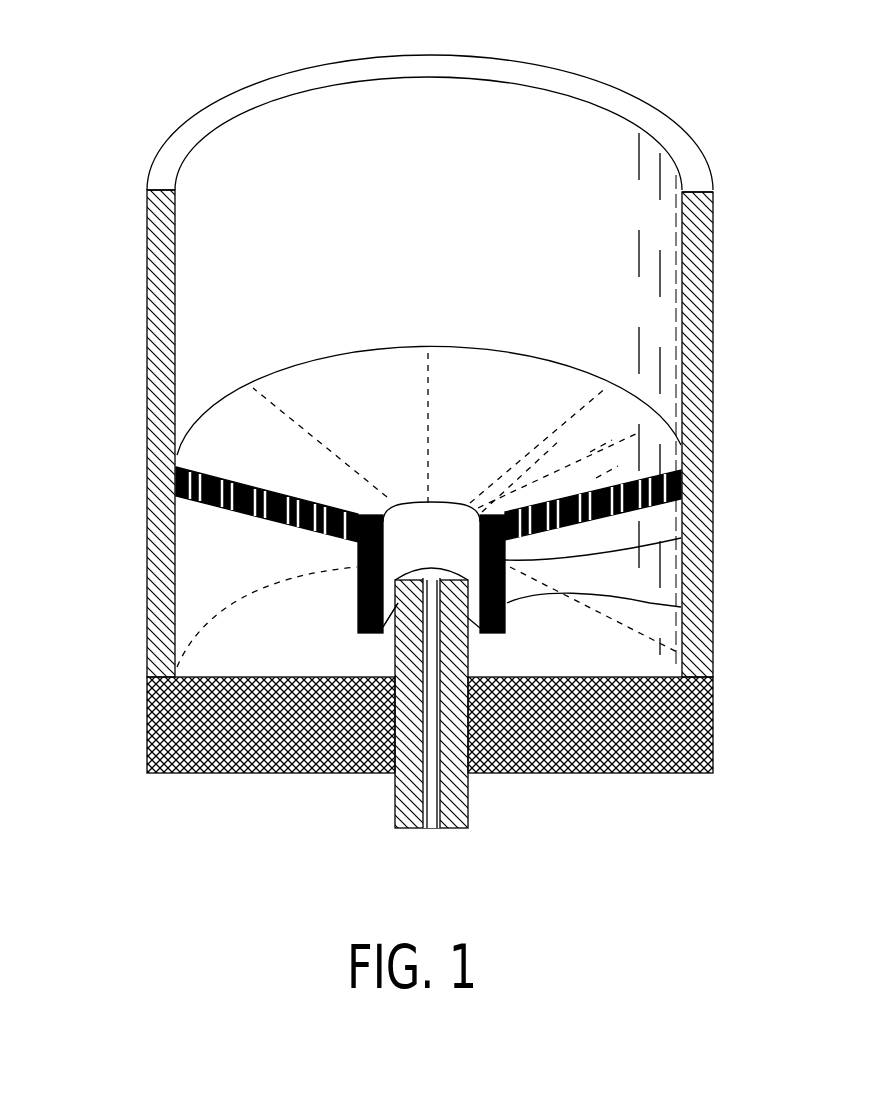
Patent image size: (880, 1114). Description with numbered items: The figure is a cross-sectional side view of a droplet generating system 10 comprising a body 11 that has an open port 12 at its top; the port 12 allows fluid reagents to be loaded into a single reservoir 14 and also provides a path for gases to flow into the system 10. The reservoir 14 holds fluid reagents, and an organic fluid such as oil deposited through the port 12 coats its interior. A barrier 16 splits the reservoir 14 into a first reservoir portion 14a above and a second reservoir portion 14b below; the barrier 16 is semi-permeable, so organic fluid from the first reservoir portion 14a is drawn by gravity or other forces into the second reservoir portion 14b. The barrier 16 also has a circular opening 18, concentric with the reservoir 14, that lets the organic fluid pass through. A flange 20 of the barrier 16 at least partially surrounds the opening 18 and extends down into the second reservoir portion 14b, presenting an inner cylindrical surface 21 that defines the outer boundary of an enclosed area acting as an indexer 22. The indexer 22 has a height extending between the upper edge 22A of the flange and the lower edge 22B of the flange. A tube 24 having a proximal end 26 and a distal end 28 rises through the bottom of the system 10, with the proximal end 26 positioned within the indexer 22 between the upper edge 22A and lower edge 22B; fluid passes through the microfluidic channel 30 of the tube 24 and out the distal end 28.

The droplet generating system 10 is at (410, 402).
The body 11 is at (683, 157).
The open port 12 is at (553, 160).
The reservoir 14 is at (410, 481).
The first reservoir portion 14a is at (200, 353).
The second reservoir portion 14b is at (197, 597).
The barrier 16 is at (210, 512).
The opening 18 is at (436, 528).
The flange 20 is at (683, 602).
The inner cylindrical surface 21 is at (413, 540).
The indexer 22 is at (489, 461).
The upper edge of the flange 22A is at (435, 528).
The lower edge of the flange 22B is at (497, 635).
The tube 24 is at (346, 738).
The proximal end 26 is at (358, 628).
The distal end 28 is at (468, 815).
The microfluidic channel 30 is at (427, 828).